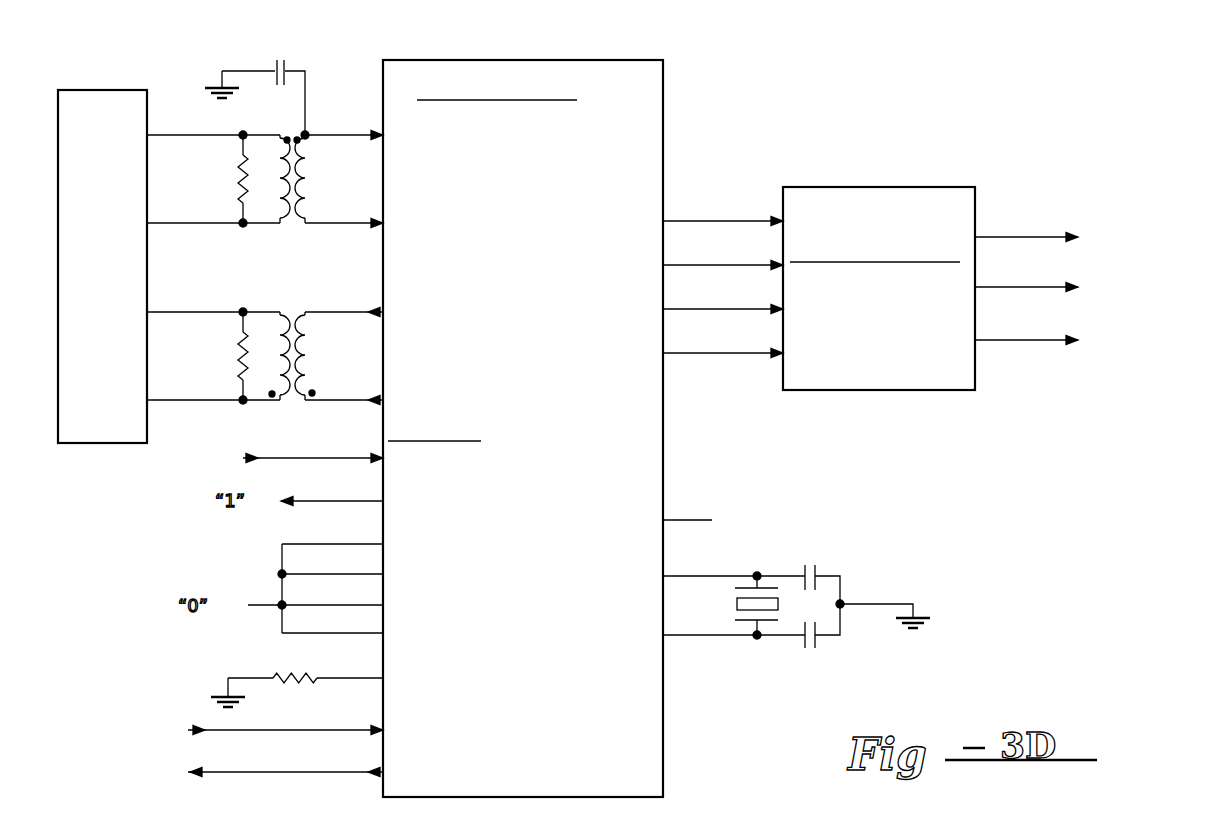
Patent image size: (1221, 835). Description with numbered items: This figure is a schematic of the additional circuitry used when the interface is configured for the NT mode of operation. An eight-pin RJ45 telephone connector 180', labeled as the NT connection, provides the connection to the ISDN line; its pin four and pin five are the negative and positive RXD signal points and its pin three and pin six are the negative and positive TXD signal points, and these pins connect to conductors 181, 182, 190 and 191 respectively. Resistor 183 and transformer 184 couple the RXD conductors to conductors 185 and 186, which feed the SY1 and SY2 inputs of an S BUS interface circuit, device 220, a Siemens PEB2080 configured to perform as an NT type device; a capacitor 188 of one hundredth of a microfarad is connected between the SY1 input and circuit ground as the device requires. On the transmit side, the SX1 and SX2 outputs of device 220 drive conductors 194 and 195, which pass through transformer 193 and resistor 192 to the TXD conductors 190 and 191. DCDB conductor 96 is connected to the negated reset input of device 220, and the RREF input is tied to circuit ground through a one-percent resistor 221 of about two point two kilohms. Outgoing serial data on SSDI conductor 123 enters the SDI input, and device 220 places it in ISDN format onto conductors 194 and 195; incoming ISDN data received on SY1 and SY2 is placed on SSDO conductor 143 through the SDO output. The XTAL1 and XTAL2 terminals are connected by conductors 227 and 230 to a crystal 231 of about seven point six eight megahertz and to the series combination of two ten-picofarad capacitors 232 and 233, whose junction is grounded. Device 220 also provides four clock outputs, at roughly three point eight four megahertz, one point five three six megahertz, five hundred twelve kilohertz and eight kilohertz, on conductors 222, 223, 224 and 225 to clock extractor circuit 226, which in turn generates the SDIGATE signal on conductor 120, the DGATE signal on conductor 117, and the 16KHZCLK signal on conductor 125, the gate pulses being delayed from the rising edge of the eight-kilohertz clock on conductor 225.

The RJ45 telephone connector 180' is at (102, 254).
The conductor 181 is at (214, 132).
The conductor 182 is at (211, 219).
The resistor 183 is at (234, 171).
The transformer 184 is at (282, 228).
The conductor 185 is at (317, 118).
The conductor 186 is at (317, 206).
The capacitor 188 is at (253, 44).
The conductor 190 is at (216, 310).
The conductor 191 is at (208, 398).
The resistor 192 is at (236, 353).
The transformer 193 is at (304, 310).
The conductor 194 is at (367, 310).
The conductor 195 is at (320, 384).
The DCDB conductor 96 is at (308, 455).
The S BUS interface circuit 220 is at (511, 58).
The resistor 221 is at (298, 671).
The SSDI conductor 123 is at (308, 726).
The SSDO conductor 143 is at (284, 769).
The conductor 222 is at (750, 217).
The conductor 223 is at (750, 261).
The conductor 224 is at (750, 304).
The conductor 225 is at (750, 349).
The clock extractor circuit 226 is at (904, 181).
The conductor 120 is at (1045, 233).
The conductor 117 is at (1047, 283).
The conductor 125 is at (1050, 336).
The conductor 227 is at (678, 556).
The conductor 230 is at (724, 632).
The crystal 231 is at (736, 600).
The capacitor 232 is at (816, 576).
The capacitor 233 is at (820, 643).